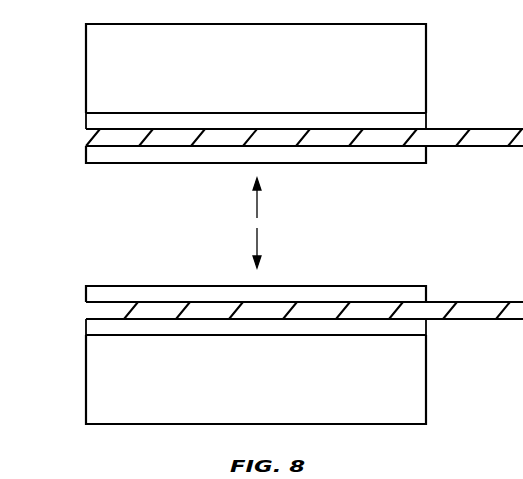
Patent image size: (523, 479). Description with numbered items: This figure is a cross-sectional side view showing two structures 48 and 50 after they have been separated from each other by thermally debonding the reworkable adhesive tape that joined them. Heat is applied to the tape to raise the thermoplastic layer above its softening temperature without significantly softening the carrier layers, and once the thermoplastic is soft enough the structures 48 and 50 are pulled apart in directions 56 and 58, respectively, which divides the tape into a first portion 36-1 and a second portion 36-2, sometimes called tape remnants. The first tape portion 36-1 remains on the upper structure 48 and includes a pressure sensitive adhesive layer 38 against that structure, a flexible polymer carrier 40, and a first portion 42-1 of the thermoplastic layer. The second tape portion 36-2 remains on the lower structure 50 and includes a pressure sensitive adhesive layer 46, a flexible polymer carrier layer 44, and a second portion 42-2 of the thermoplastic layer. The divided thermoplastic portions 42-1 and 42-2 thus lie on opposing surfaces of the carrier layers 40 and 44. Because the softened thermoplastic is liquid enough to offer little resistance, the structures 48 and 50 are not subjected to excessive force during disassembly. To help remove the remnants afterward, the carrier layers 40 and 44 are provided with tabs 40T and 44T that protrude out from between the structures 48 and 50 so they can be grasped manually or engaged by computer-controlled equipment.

The first portion of tape 36-1 is at (256, 109).
The second portion of tape 36-2 is at (256, 346).
The pressure sensitive adhesive layer 38 is at (130, 120).
The flexible polymer carrier 40 is at (108, 137).
The tab 40T is at (520, 128).
The first portion of thermoplastic layer 42-1 is at (420, 154).
The second portion of thermoplastic layer 42-2 is at (420, 294).
The flexible polymer carrier layer 44 is at (108, 313).
The tab 44T is at (520, 323).
The pressure sensitive adhesive layer 46 is at (130, 329).
The structure 48 is at (420, 48).
The structure 50 is at (420, 400).
The direction 56 is at (257, 203).
The direction 58 is at (257, 242).